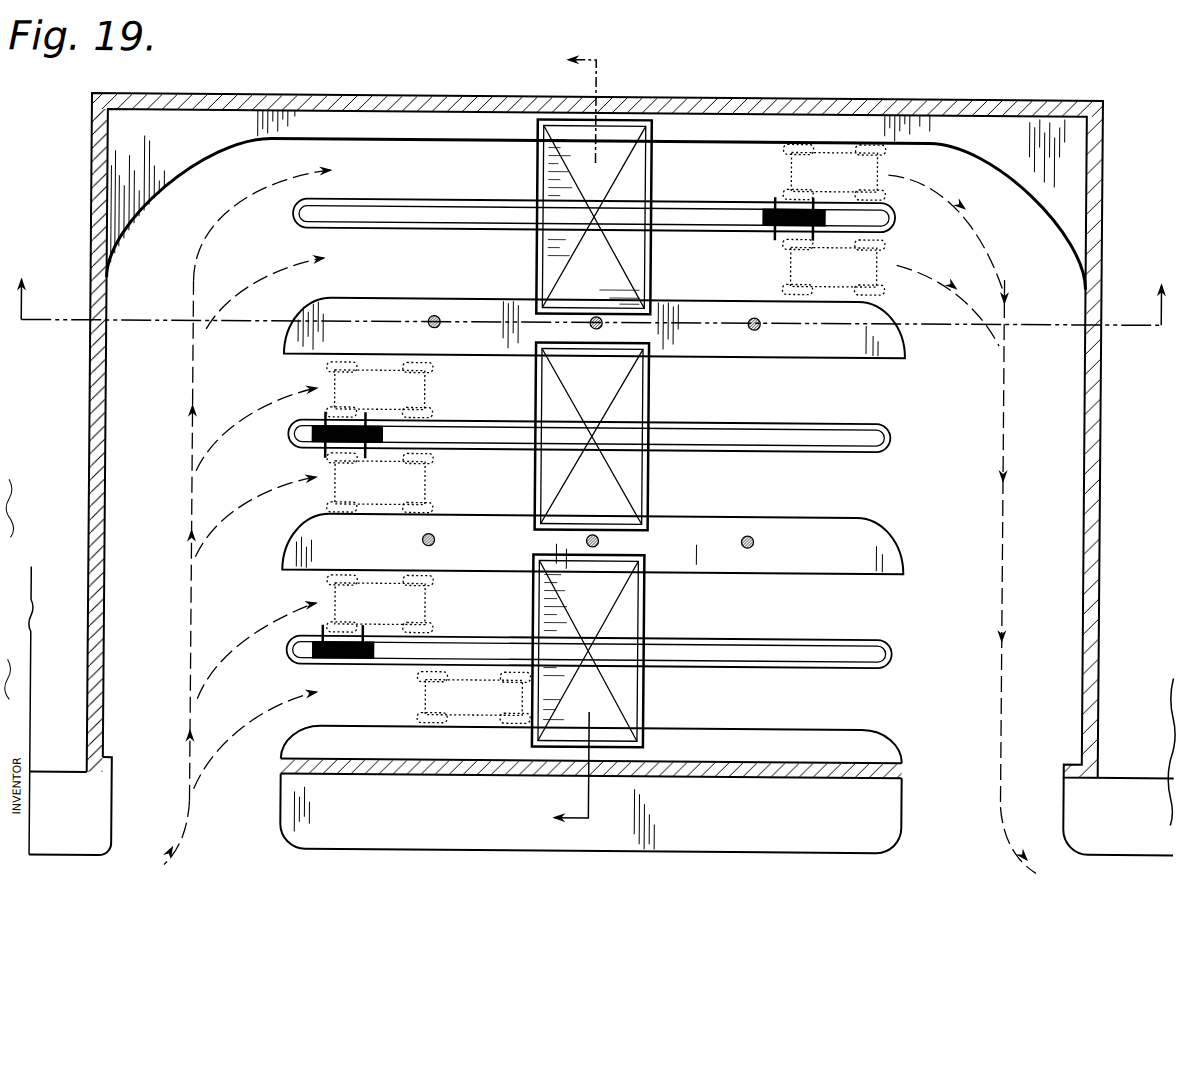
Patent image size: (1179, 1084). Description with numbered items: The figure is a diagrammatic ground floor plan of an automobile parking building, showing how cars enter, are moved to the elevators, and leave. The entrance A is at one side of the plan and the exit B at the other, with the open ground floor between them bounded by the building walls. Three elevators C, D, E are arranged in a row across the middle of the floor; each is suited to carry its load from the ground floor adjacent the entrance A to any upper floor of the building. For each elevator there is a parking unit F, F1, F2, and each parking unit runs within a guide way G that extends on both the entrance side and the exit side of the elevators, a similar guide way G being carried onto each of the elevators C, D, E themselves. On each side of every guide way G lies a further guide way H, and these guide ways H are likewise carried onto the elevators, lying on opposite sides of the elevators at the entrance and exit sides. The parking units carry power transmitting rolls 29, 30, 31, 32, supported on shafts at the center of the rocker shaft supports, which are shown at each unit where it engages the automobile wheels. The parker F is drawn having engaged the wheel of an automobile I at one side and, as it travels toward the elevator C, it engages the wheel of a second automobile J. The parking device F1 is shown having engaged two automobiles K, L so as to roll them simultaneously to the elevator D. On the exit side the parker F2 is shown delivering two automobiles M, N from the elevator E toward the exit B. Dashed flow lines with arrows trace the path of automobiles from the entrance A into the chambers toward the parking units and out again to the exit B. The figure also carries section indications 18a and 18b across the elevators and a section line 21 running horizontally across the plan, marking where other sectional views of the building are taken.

The power transmitting roll 29 is at (771, 204).
The power transmitting roll 30 is at (774, 230).
The power transmitting roll 31 is at (815, 196).
The power transmitting roll 32 is at (815, 236).
The section line 18a is at (558, 99).
The section line 18b is at (555, 777).
The section line 21 is at (586, 289).
The entrance A is at (190, 573).
The exit B is at (990, 577).
The elevator C is at (588, 650).
The elevator D is at (592, 436).
The elevator E is at (594, 216).
The parking unit F is at (314, 654).
The parking unit F1 is at (313, 434).
The parking unit F2 is at (763, 213).
The guide way G is at (294, 210).
The guide way H is at (593, 506).
The automobile I is at (380, 604).
The automobile J is at (473, 698).
The automobile K is at (379, 390).
The automobile L is at (380, 483).
The automobile M is at (834, 172).
The automobile N is at (833, 267).